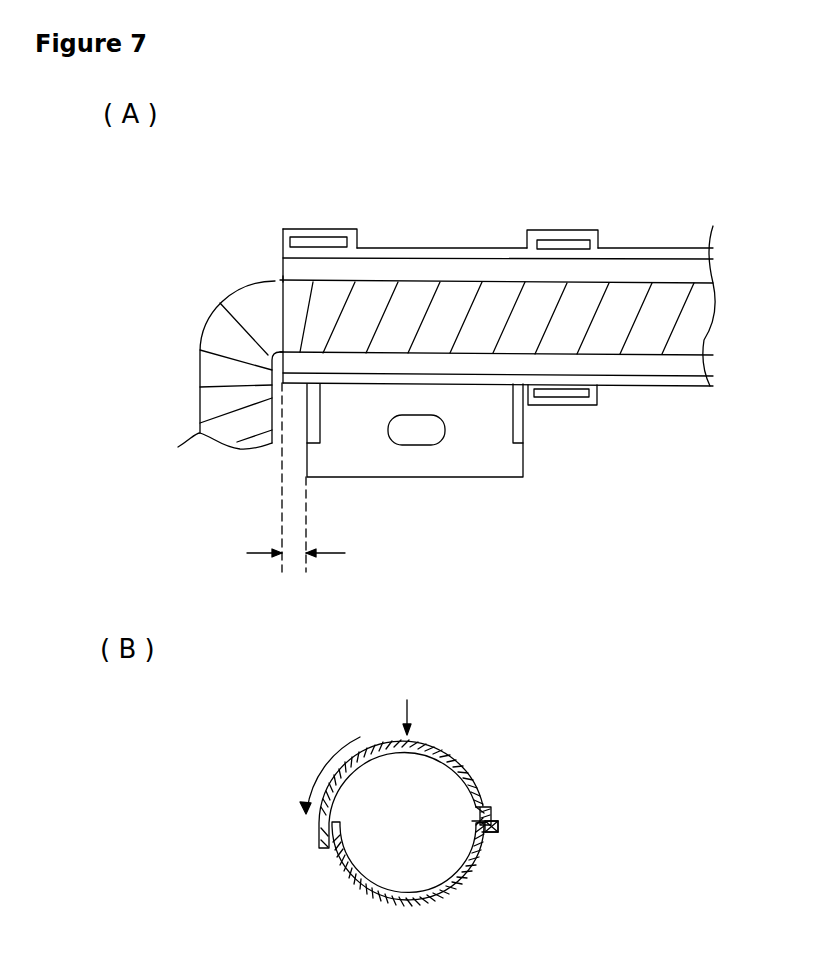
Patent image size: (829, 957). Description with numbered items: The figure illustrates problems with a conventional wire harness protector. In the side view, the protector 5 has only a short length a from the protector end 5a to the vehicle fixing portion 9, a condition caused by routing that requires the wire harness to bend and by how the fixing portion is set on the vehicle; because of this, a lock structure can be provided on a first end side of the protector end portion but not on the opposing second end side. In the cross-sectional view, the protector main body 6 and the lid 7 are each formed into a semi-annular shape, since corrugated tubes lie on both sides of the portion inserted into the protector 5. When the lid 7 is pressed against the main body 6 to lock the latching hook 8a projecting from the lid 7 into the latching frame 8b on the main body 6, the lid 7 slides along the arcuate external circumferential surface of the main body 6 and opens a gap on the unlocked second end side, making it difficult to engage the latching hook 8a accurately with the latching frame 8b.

In FIG. 7A, the protector 5 is at (658, 246).
In FIG. 7A, the protector end 5a is at (283, 276).
In FIG. 7A, the protector main body 6 is at (438, 247).
In FIG. 7B, the protector main body 6 is at (433, 907).
In FIG. 7B, the lid 7 is at (450, 752).
In FIG. 7B, the latching hook 8a is at (491, 803).
In FIG. 7A, the latching frame 8b is at (322, 229).
In FIG. 7B, the latching frame 8b is at (498, 828).
In FIG. 7A, the vehicle fixing portion 9 is at (403, 467).
In FIG. 7A, the length a is at (296, 477).